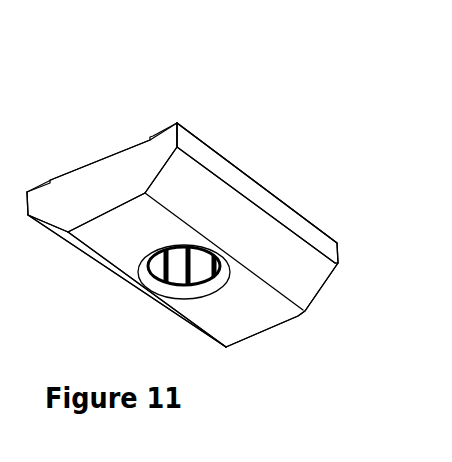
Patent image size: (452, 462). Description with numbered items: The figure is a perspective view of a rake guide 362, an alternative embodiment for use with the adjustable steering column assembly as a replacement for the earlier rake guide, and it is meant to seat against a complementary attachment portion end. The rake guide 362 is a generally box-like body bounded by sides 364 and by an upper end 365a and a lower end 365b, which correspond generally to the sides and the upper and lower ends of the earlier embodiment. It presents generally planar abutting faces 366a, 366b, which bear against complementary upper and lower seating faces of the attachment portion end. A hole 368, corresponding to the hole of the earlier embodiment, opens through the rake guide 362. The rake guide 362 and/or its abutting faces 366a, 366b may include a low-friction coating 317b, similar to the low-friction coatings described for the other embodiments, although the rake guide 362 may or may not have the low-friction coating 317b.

The rake guide 362 is at (210, 58).
The sides 364 is at (113, 185).
The abutting face 366a is at (220, 213).
The upper end 365a is at (296, 162).
The lower end 365b is at (63, 261).
The abutting face 366b is at (110, 268).
The hole 368 is at (206, 278).
The low-friction coating 317b is at (295, 280).